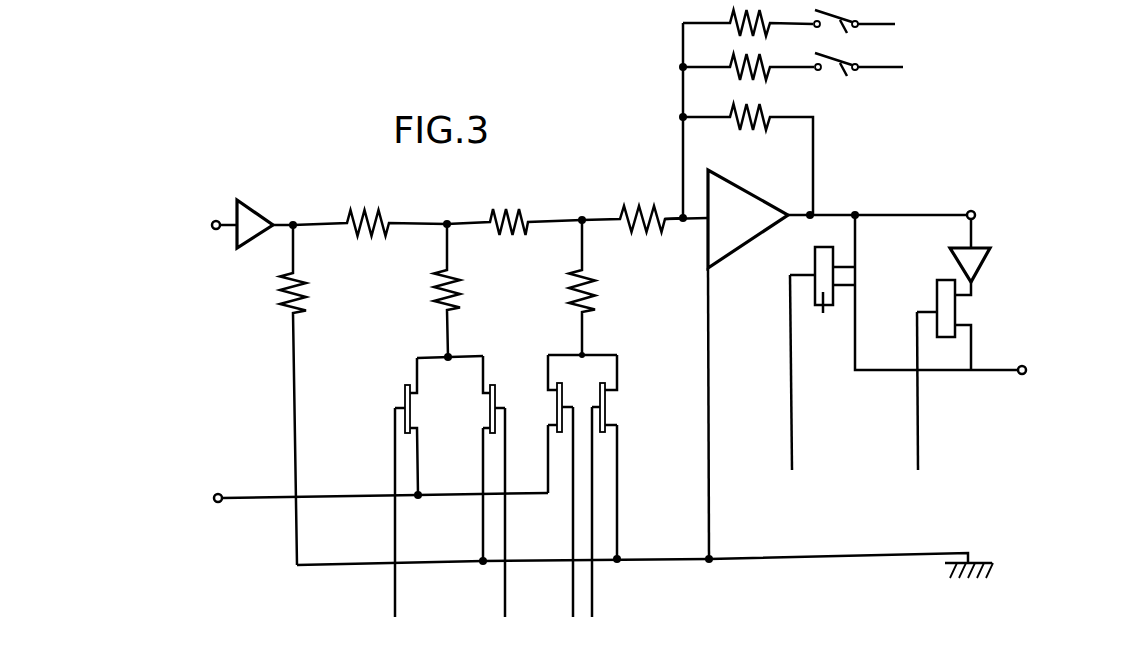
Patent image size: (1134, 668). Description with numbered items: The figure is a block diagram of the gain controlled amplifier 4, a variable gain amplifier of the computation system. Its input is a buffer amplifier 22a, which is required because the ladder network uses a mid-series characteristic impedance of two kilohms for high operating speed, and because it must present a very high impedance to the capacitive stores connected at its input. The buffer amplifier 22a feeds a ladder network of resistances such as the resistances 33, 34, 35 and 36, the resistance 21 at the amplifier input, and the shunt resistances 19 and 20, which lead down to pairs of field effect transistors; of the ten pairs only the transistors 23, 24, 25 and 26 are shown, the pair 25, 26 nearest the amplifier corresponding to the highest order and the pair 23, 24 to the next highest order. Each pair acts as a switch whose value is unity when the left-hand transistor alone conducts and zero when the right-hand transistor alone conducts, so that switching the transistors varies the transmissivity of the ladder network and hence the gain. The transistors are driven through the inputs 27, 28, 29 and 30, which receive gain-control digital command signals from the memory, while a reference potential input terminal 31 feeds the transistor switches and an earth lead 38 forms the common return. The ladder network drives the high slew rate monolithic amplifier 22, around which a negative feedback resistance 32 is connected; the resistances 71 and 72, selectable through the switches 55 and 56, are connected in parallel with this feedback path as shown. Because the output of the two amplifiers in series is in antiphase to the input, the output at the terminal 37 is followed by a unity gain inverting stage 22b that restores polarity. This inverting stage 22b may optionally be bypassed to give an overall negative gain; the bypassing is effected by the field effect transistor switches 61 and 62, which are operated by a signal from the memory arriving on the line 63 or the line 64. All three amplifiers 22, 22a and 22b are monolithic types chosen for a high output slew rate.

The gain controlled amplifier 4 is at (596, 130).
The resistance 19 is at (455, 302).
The resistance 20 is at (590, 300).
The input resistor 21 is at (667, 215).
The high slew rate monolithic amplifier 22 is at (738, 228).
The buffer amplifier 22a is at (249, 226).
The unity gain inverting stage 22b is at (1003, 237).
The field effect transistor 23 is at (401, 397).
The field effect transistor 24 is at (483, 398).
The field effect transistor 25 is at (553, 398).
The field effect transistor 26 is at (607, 398).
The input 27 is at (393, 597).
The input 28 is at (502, 593).
The input 29 is at (573, 597).
The input 30 is at (595, 597).
The reference potential input terminal 31 is at (224, 492).
The negative feedback resistance 32 is at (762, 122).
The resistance 33 is at (302, 300).
The resistance 34 is at (367, 212).
The resistance 35 is at (496, 210).
The resistance 36 is at (645, 228).
The output terminal 37 is at (963, 220).
The earth lead 38 is at (830, 557).
The switch 55 is at (854, 34).
The switch 56 is at (859, 77).
The field effect transistor switch 61 is at (822, 297).
The field effect transistor switch 62 is at (938, 312).
The line 63 is at (794, 448).
The line 64 is at (920, 448).
The resistance 71 is at (735, 30).
The resistance 72 is at (737, 70).